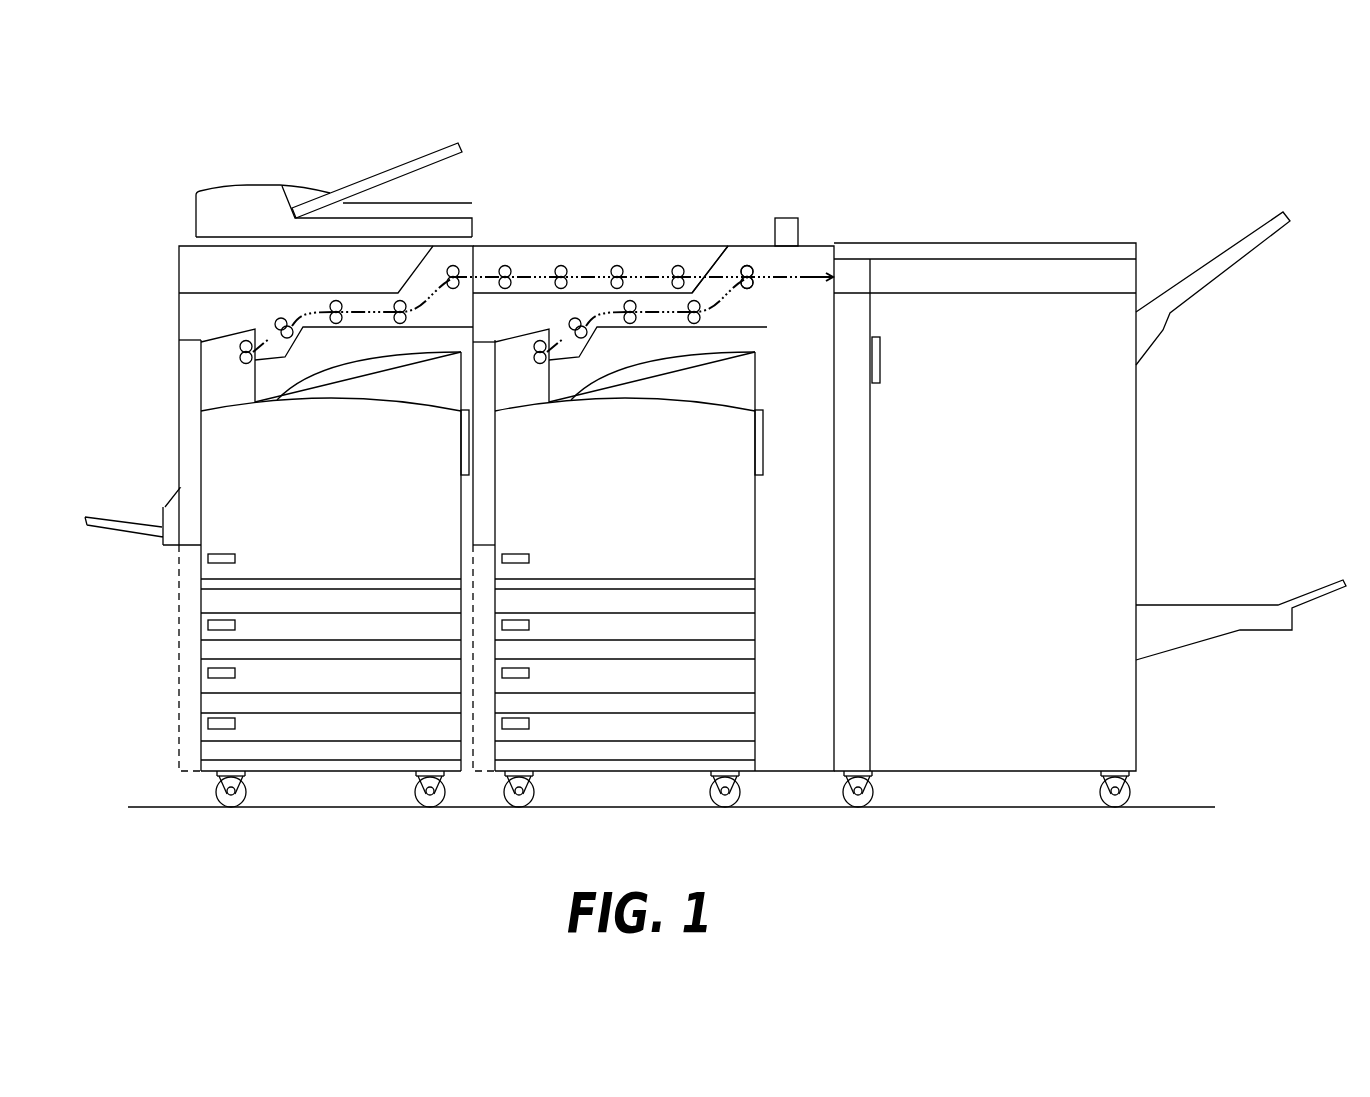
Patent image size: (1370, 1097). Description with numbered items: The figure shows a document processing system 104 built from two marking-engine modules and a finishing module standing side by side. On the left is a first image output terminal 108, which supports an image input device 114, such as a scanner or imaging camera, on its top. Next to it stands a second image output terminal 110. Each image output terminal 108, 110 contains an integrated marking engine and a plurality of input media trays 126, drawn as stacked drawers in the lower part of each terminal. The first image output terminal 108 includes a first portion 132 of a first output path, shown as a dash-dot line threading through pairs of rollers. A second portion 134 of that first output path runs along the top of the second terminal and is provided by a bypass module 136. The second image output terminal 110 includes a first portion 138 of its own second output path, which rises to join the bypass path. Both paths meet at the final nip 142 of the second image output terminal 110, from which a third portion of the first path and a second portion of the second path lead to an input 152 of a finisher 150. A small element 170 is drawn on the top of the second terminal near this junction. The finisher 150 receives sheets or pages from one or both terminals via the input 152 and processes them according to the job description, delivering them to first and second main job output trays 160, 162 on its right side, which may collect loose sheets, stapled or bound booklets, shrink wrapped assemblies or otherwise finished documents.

The document processing system 104 is at (1252, 120).
The image input device 114 is at (218, 190).
The first portion of first output path 132 is at (377, 312).
The first image output terminal 108 is at (313, 511).
The second image output terminal 110 is at (607, 511).
The first portion of second output path 138 is at (662, 306).
The second portion of first output path 134 is at (587, 276).
The bypass module 136 is at (704, 246).
The final nip 142 is at (746, 270).
The sensor 170 is at (787, 218).
The input 152 is at (822, 276).
The finisher 150 is at (981, 507).
The first main job output tray 160 is at (1218, 278).
The second main job output tray 162 is at (1240, 633).
The input media trays 126 is at (335, 679).